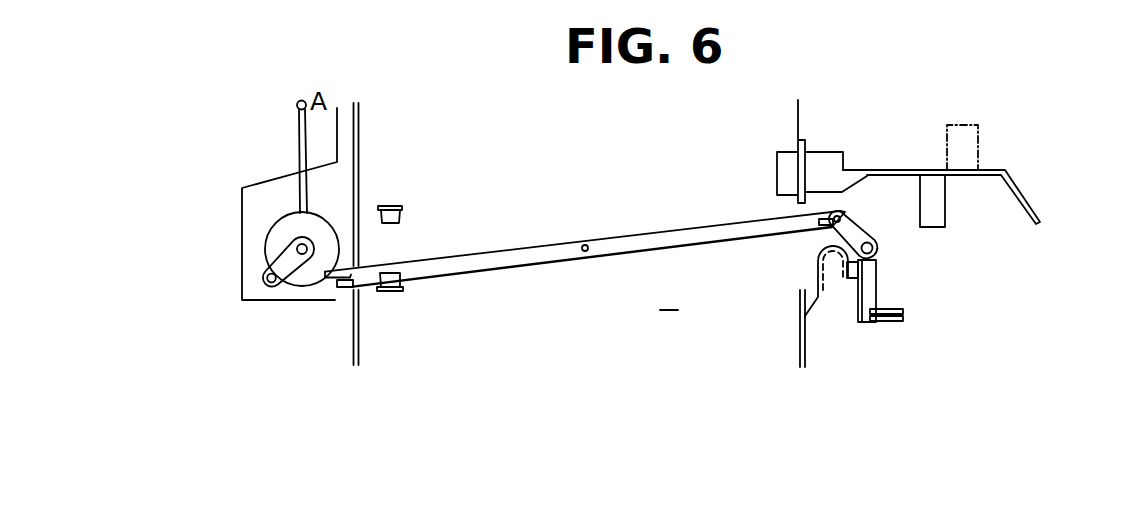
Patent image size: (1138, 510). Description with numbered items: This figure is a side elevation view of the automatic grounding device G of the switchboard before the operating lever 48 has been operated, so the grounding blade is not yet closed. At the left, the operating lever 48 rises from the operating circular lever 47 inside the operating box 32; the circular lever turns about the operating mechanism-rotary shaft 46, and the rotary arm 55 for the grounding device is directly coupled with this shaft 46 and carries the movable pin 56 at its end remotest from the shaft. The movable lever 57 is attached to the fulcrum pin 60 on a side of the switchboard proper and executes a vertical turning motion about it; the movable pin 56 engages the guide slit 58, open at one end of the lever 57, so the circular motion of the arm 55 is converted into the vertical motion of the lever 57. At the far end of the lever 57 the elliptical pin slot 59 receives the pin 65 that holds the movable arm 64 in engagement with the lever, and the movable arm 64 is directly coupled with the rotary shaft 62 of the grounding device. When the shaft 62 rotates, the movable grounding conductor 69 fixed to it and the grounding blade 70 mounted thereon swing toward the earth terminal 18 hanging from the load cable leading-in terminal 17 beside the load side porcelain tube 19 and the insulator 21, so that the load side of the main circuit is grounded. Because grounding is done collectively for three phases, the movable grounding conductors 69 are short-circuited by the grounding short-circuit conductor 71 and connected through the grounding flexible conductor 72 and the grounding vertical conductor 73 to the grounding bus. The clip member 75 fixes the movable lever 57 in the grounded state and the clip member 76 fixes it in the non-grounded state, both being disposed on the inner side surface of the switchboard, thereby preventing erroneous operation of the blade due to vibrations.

The load cable leading-in terminal 17 is at (1028, 193).
The earth terminal 18 is at (945, 208).
The load side porcelain tube 19 is at (833, 152).
The insulator 21 is at (978, 142).
The operating box 32 is at (263, 187).
The operating mechanism-rotary shaft 46 is at (300, 258).
The operating circular lever 47 is at (333, 216).
The operating lever 48 is at (298, 125).
The rotary arm for the grounding device 55 is at (268, 286).
The movable pin for the grounding device 56 is at (268, 274).
The movable lever for the grounding device 57 is at (522, 246).
The guide slit 58 is at (345, 289).
The elliptical pin slot 59 is at (823, 227).
The fulcrum pin of the movable lever 60 is at (588, 246).
The rotary shaft for the grounding device 62 is at (871, 238).
The movable arm for the grounding device 64 is at (877, 250).
The pin for the engagement between the movable lever and the movable arm 65 is at (841, 216).
The movable grounding conductor 69 is at (857, 300).
The grounding blade 70 is at (893, 304).
The grounding short-circuit conductor 71 is at (850, 282).
The grounding flexible conductor 72 is at (815, 272).
The grounding vertical conductor 73 is at (805, 360).
The clip member for the grounded state 75 is at (402, 215).
The clip member for the non-grounded state 76 is at (402, 285).
The grounding device G is at (668, 247).